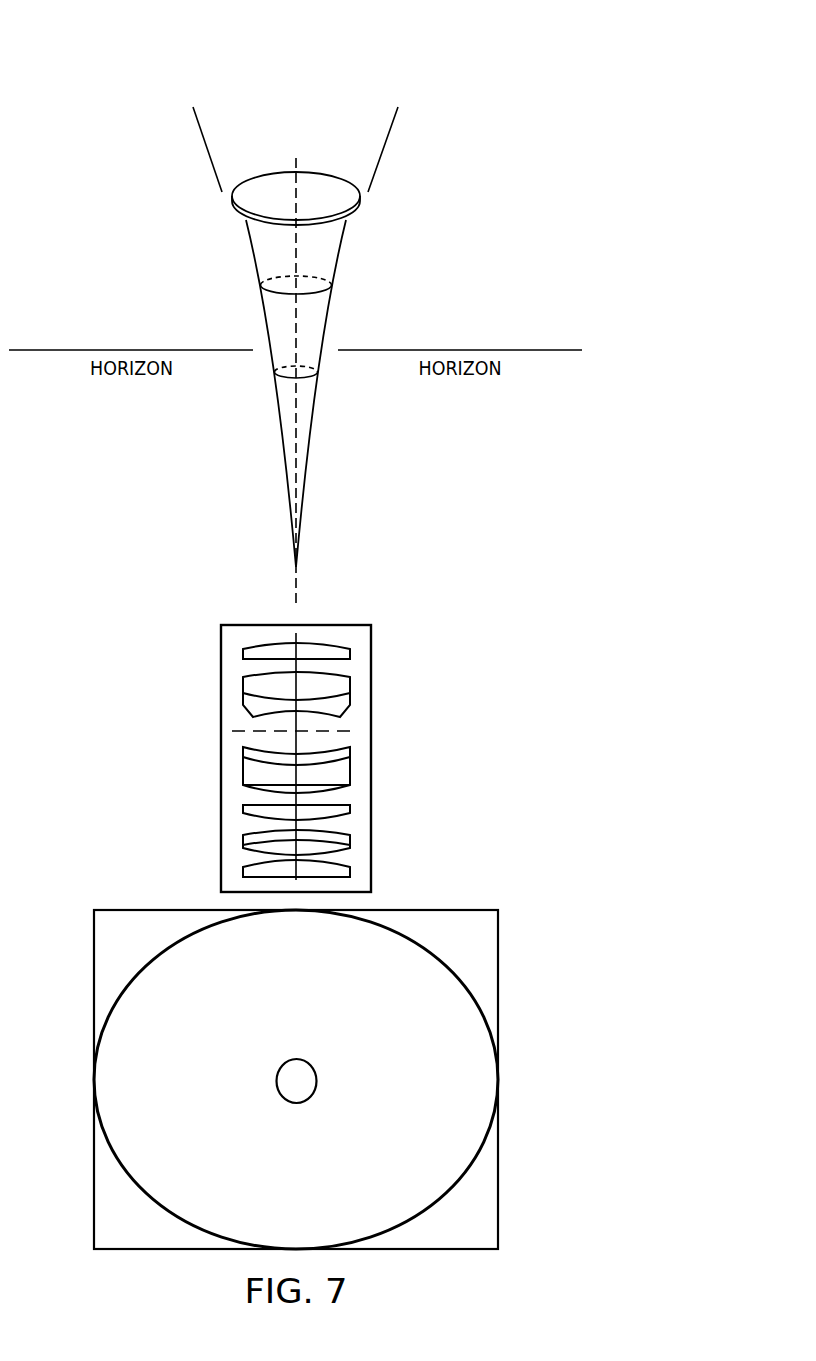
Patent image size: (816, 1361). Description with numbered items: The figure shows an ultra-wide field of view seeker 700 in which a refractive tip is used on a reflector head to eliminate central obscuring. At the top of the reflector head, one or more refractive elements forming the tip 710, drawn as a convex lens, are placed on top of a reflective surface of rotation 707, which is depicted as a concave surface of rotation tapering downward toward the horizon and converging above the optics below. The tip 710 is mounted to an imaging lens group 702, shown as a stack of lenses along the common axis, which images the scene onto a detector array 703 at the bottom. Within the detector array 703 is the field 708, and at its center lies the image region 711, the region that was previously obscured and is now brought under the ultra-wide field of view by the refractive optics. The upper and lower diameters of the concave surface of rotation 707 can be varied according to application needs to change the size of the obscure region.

The ultra-wide field of view seeker 700 is at (101, 69).
The imaging lens group 702 is at (221, 757).
The detector array 703 is at (85, 1184).
The reflective surface of rotation 707 is at (239, 315).
The image circle 708 is at (440, 1200).
The refractive tip 710 is at (278, 183).
The image region 711 is at (296, 1103).